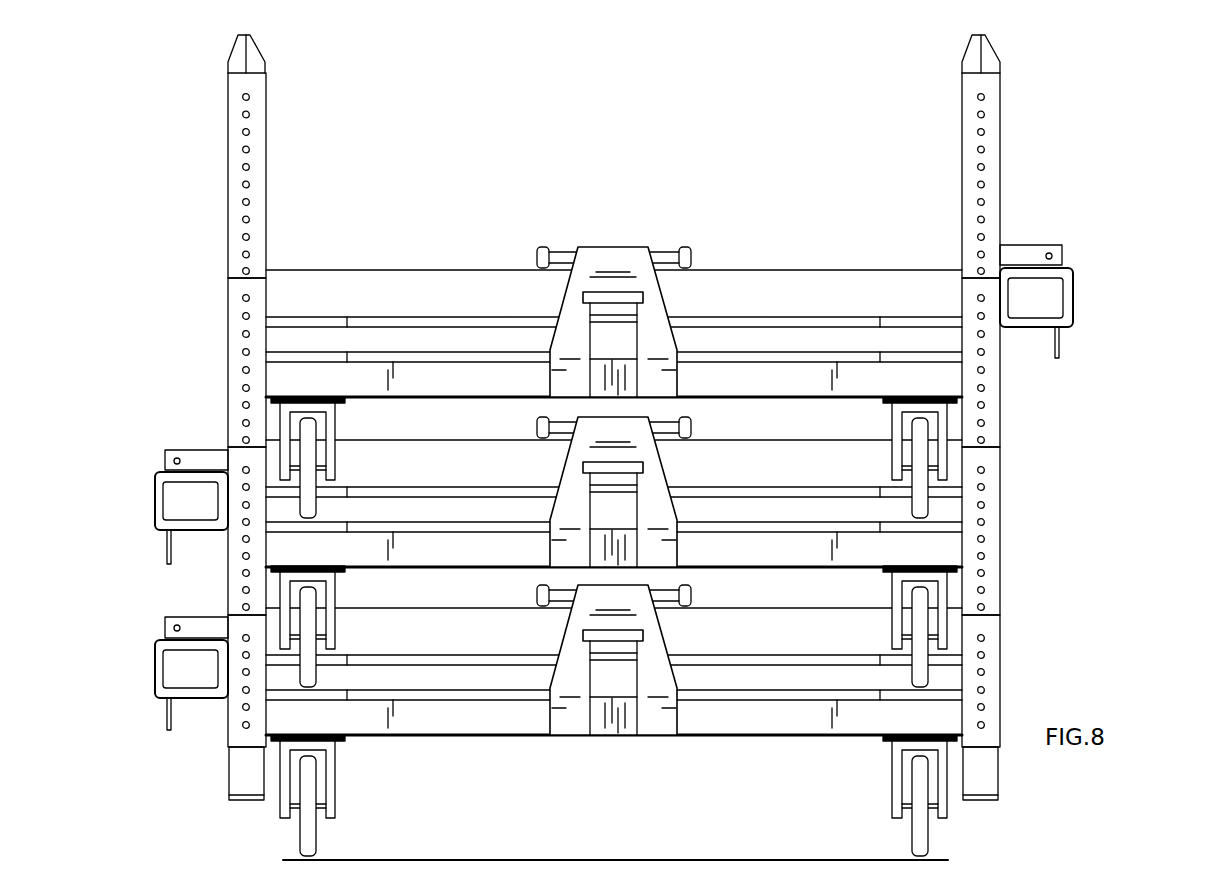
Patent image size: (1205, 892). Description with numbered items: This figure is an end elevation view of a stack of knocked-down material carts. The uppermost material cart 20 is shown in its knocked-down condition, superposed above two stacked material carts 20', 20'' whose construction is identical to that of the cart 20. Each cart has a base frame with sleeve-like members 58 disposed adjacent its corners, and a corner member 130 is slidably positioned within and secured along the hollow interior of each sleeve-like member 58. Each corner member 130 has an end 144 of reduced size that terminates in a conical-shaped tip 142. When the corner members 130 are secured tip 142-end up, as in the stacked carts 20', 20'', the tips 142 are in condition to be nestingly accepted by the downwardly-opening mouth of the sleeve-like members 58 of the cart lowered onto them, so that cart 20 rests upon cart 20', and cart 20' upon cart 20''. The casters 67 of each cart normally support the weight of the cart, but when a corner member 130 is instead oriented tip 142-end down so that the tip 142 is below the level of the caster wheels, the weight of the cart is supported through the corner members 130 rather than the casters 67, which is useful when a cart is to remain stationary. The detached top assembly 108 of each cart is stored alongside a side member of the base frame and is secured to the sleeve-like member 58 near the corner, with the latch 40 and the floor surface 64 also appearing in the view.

The material cart 20 is at (614, 290).
The material cart 20' is at (559, 474).
The material cart 20'' is at (527, 653).
The latch 40 is at (155, 512).
The sleeve-like member 58 is at (228, 218).
The floor surface 64 is at (695, 860).
The caster 67 is at (318, 838).
The top assembly 108 is at (165, 455).
The corner member 130 is at (565, 431).
The tip 142 is at (259, 53).
The end of reduced size 144 is at (198, 187).